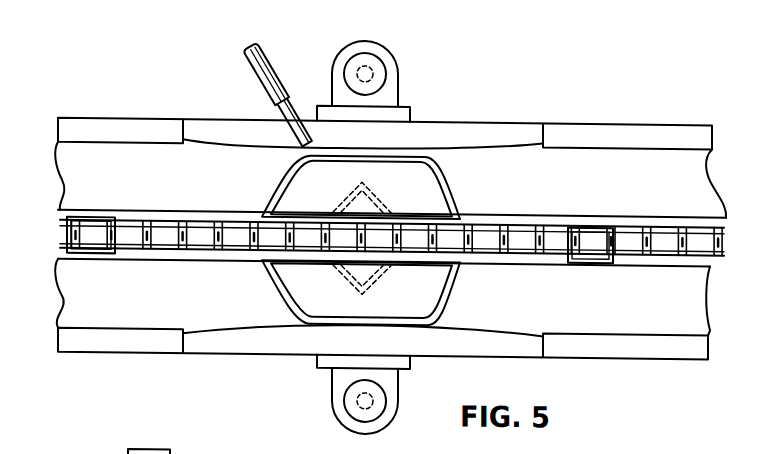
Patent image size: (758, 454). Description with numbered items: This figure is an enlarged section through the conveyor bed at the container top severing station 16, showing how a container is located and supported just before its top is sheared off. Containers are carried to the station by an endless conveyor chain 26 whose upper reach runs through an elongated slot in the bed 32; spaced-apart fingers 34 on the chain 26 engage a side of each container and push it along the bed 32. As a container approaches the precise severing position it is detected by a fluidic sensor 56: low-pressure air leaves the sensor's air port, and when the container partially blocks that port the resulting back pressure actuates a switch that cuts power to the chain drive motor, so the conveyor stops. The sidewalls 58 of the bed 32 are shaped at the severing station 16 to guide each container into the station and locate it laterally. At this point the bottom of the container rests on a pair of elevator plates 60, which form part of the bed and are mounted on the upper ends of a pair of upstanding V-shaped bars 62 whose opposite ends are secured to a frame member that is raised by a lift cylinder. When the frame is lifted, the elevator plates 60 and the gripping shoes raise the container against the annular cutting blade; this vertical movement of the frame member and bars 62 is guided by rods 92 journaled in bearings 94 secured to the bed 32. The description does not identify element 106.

The container top severing station 16 is at (456, 78).
The endless conveyor chain 26 is at (662, 257).
The bed 32 is at (65, 178).
The spaced-apart fingers 34 is at (600, 257).
The fluidic sensor 56 is at (292, 104).
The sidewalls 58 is at (236, 146).
The elevator plates 60 is at (436, 197).
The V-shaped bars 62 is at (384, 197).
The rods 92 is at (365, 70).
The bearings 94 is at (390, 48).
The support member 106 is at (186, 440).